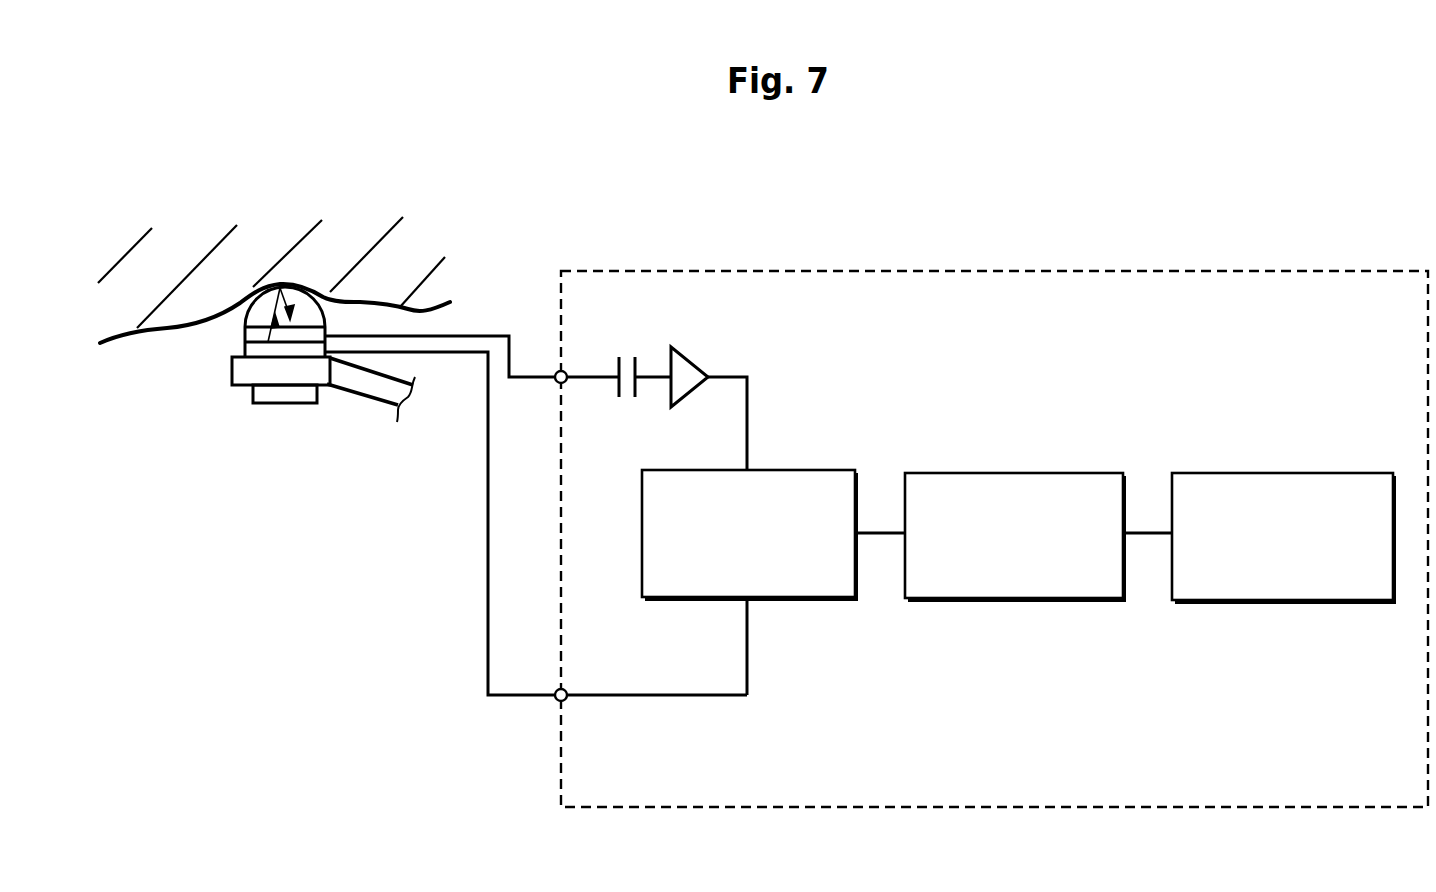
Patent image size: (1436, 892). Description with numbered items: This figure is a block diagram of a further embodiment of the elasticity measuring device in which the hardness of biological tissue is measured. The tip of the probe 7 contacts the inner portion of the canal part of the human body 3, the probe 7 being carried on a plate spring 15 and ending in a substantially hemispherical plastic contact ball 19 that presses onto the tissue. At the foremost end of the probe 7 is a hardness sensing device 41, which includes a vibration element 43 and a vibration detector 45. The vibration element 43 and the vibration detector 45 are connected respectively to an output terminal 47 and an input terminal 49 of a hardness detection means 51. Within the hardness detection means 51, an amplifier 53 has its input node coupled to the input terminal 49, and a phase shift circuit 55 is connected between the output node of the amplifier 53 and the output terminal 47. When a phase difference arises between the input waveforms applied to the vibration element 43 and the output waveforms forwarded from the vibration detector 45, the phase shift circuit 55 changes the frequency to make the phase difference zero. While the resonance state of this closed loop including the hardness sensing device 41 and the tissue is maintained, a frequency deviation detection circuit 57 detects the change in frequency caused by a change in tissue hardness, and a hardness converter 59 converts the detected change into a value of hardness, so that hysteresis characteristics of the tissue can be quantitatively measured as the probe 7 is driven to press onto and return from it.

The canal part of the human body 3 is at (287, 238).
The probe 7 is at (349, 491).
The plate spring 15 is at (375, 392).
The contact ball 19 is at (315, 307).
The hardness sensing device 41 is at (134, 380).
The vibration element 43 is at (232, 358).
The vibration detector 45 is at (243, 337).
The output terminal 47 is at (557, 700).
The input terminal 49 is at (558, 370).
The hardness detection means 51 is at (975, 271).
The amplifier 53 is at (687, 357).
The phase shift circuit 55 is at (795, 601).
The frequency deviation detection circuit 57 is at (1060, 601).
The hardness converter 59 is at (1330, 603).